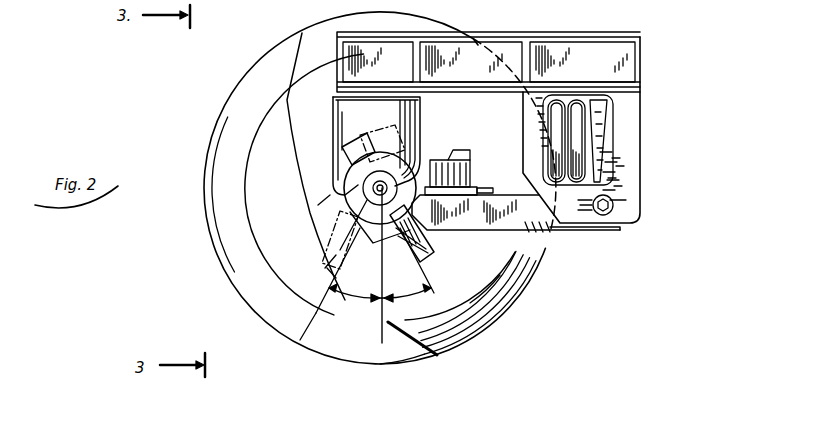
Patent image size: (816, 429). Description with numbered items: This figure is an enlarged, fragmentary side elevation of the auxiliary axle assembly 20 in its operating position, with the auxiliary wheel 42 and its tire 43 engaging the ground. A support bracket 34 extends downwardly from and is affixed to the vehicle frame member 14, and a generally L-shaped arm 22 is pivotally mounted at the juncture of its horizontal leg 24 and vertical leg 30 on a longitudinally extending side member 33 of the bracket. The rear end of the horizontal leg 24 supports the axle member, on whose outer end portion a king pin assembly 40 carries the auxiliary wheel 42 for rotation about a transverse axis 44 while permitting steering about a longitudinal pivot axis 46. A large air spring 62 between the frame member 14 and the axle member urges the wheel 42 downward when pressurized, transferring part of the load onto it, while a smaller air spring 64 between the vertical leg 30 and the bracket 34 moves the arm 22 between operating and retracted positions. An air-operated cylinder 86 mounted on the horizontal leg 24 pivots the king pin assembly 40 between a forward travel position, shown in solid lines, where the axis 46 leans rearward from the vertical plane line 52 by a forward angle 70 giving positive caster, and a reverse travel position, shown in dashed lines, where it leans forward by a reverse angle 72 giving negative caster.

The frame member 14 is at (587, 32).
The auxiliary axle assembly 20 is at (645, 130).
The arm 22 is at (598, 233).
The horizontal leg 24 is at (538, 235).
The vertical leg 30 is at (597, 148).
The side member 33 is at (613, 174).
The support bracket 34 is at (645, 204).
The king pin assembly 40 is at (393, 220).
The auxiliary wheel 42 is at (263, 242).
The tire 43 is at (506, 291).
The transverse axis 44 is at (345, 192).
The longitudinal pivot axis 46 is at (338, 133).
The vertical plane line 52 is at (382, 340).
The air spring 62 is at (420, 113).
The smaller air spring 64 is at (578, 120).
The forward angle 70 is at (407, 303).
The reverse angle 72 is at (343, 306).
The air-operated cylinder 86 is at (473, 165).